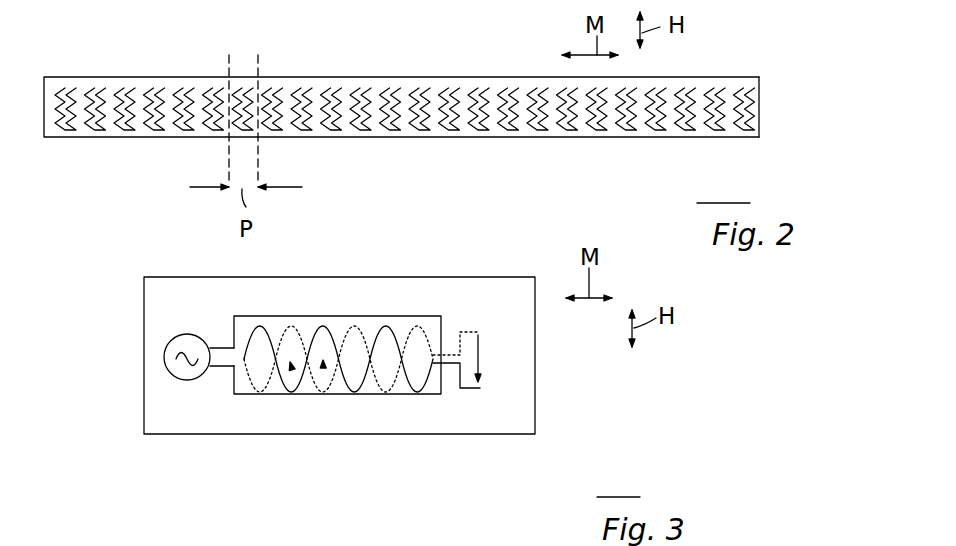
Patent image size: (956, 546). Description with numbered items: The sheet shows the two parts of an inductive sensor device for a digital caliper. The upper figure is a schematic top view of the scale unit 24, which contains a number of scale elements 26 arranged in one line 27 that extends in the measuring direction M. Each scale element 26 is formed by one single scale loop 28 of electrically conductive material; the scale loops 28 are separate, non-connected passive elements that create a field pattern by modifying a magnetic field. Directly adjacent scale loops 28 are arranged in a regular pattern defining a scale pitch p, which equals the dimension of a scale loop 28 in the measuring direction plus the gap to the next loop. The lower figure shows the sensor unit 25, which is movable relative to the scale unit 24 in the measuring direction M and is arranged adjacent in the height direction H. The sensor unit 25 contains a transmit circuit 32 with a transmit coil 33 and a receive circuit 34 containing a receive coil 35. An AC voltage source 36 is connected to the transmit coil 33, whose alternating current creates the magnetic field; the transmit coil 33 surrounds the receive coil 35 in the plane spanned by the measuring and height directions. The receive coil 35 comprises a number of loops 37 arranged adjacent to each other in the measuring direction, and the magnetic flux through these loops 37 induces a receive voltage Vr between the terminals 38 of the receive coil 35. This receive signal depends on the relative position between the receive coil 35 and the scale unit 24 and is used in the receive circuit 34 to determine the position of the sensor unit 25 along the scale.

In FIG. 2, the scale unit 24 is at (752, 47).
In FIG. 2, the scale element 26 is at (393, 87).
In FIG. 2, the line 27 is at (761, 107).
In FIG. 2, the scale loop 28 is at (448, 87).
In FIG. 3, the sensor unit 25 is at (536, 412).
In FIG. 3, the transmit circuit 32 is at (194, 318).
In FIG. 3, the transmit coil 33 is at (242, 395).
In FIG. 3, the receive circuit 34 is at (466, 306).
In FIG. 3, the receive coil 35 is at (312, 352).
In FIG. 3, the AC voltage source 36 is at (165, 372).
In FIG. 3, the loops 37 is at (323, 362).
In FIG. 3, the terminals 38 is at (433, 346).